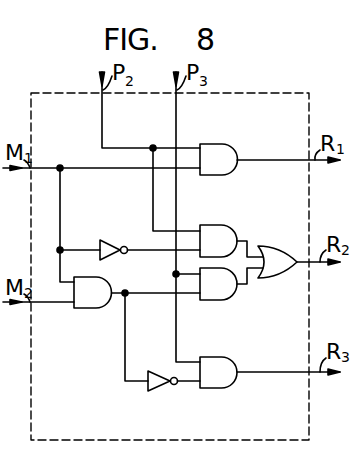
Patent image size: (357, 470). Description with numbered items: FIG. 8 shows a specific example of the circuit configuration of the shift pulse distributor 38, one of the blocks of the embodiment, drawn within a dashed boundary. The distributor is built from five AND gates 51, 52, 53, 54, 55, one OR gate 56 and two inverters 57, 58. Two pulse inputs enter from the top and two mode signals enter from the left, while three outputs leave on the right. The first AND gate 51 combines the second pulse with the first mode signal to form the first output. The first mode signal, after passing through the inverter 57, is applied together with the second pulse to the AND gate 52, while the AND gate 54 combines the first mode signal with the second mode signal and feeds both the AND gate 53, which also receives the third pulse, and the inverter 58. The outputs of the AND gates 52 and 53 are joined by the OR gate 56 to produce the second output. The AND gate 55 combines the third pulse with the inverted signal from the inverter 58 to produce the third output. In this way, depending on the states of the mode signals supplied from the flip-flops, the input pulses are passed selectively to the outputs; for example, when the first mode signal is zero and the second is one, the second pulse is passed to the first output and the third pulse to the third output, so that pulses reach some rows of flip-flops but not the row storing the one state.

The shift pulse distributor 38 is at (250, 93).
The AND gate 51 is at (224, 132).
The AND gate 52 is at (218, 226).
The AND gate 53 is at (228, 300).
The AND gate 54 is at (84, 308).
The AND gate 55 is at (226, 357).
The OR gate 56 is at (273, 238).
The inverter 57 is at (106, 240).
The inverter 58 is at (160, 388).